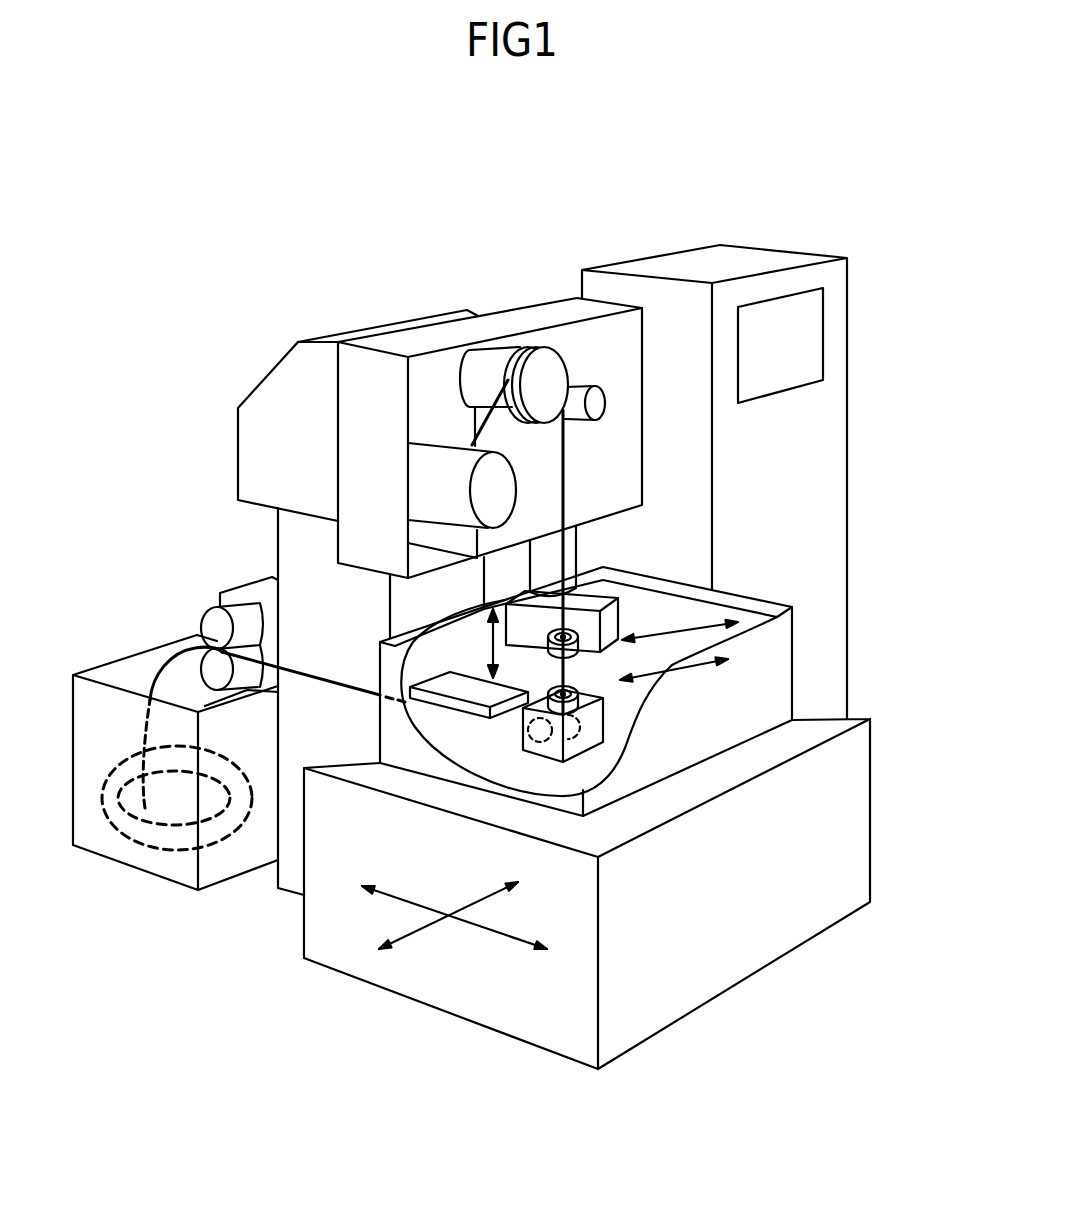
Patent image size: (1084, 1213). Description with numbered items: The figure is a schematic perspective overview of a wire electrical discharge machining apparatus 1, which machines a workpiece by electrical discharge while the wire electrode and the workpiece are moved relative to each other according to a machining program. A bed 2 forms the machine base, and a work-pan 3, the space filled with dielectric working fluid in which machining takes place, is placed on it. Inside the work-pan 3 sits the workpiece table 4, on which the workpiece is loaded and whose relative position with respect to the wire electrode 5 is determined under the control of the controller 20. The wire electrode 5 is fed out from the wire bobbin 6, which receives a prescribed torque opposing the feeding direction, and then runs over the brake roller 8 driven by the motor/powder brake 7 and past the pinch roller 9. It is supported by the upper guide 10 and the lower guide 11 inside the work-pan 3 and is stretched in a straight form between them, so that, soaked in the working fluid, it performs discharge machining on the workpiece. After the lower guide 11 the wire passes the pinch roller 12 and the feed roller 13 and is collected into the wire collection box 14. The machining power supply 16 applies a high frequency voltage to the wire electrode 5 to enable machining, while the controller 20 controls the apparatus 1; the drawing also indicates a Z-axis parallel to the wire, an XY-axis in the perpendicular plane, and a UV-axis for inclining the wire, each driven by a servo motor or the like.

The wire electrical discharge machining apparatus 1 is at (585, 185).
The bed 2 is at (858, 819).
The work-pan 3 is at (778, 650).
The workpiece table 4 is at (445, 684).
The wire electrode 5 is at (566, 545).
The wire bobbin 6 is at (492, 490).
The motor/powder brake 7 is at (490, 348).
The brake roller 8 is at (528, 345).
The pinch roller 9 is at (603, 399).
The upper guide 10 is at (608, 614).
The lower guide 11 is at (603, 731).
The pinch roller 12 is at (242, 604).
The feed roller 13 is at (252, 672).
The wire collection box 14 is at (113, 666).
The machining power supply 16 is at (753, 253).
The controller 20 is at (825, 358).